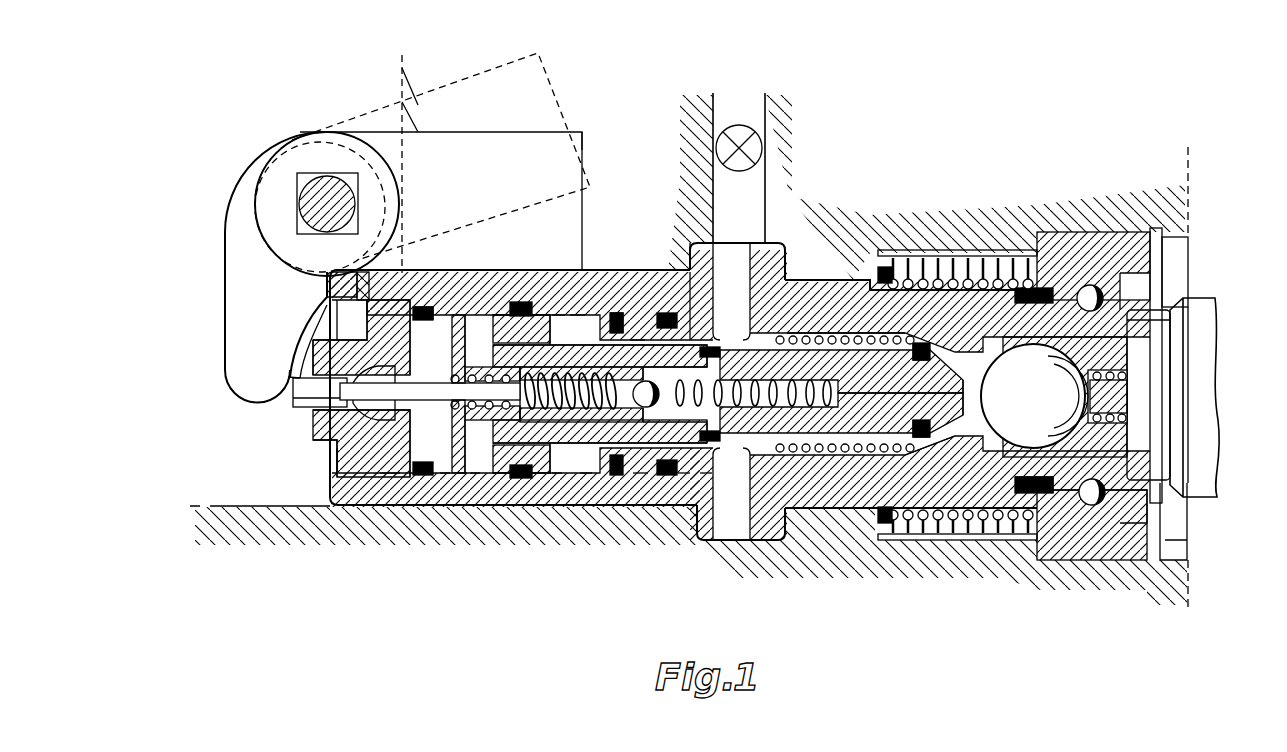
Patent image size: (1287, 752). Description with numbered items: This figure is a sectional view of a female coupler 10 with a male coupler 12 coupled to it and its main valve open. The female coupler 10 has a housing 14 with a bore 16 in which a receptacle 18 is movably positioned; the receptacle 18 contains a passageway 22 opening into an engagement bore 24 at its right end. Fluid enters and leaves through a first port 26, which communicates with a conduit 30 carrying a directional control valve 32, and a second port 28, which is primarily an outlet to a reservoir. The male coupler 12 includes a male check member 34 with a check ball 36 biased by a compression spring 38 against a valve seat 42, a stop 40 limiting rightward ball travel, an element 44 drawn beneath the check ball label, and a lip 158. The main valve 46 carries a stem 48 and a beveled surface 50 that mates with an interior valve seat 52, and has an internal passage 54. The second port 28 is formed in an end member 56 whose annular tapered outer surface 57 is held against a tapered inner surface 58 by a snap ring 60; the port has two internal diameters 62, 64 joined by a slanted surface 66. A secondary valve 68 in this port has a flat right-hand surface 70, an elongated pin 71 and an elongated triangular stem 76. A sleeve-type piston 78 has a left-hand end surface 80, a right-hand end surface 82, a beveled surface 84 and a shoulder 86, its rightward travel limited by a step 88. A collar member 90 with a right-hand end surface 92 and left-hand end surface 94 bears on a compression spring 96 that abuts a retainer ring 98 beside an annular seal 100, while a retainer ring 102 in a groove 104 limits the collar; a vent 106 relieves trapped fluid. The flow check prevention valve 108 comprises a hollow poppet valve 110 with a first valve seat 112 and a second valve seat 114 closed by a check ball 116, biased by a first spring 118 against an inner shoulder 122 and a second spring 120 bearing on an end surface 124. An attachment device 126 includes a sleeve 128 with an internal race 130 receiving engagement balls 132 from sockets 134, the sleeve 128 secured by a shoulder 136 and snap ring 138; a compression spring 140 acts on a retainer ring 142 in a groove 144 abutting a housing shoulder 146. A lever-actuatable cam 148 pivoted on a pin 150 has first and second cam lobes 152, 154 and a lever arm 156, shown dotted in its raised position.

The female coupler 10 is at (994, 141).
The male coupler 12 is at (1216, 298).
The housing 14 is at (1190, 172).
The bore 16 is at (948, 255).
The receptacle 18 is at (649, 300).
The passageway 22 is at (973, 500).
The engagement bore 24 is at (1016, 492).
The first port 26 is at (740, 300).
The second port 28 is at (311, 340).
The conduit 30 is at (766, 186).
The directional control valve 32 is at (752, 128).
The male check member 34 is at (1165, 497).
The check ball 36 is at (1013, 403).
The compression spring 38 is at (1110, 418).
The stop 40 is at (1110, 394).
The valve seat 42 is at (990, 372).
The seat 44 is at (993, 408).
The main valve 46 is at (836, 369).
The stem 48 is at (910, 376).
The beveled surface 50 is at (892, 426).
The interior valve seat 52 is at (907, 470).
The internal passage 54 is at (748, 410).
The end member 56 is at (373, 346).
The annular tapered outer surface 57 is at (382, 290).
The tapered inner surface 58 is at (420, 302).
The snap ring 60 is at (352, 268).
The internal diameter 62 is at (470, 305).
The internal diameter 64 is at (322, 345).
The slanted surface 66 is at (337, 447).
The secondary valve 68 is at (305, 404).
The flat right-hand surface 70 is at (368, 432).
The elongated pin 71 is at (390, 476).
The elongated triangular stem 76 is at (318, 394).
The piston 78 is at (531, 344).
The left-hand end surface 80 is at (502, 292).
The right-hand end surface 82 is at (714, 298).
The beveled surface 84 is at (498, 350).
The shoulder 86 is at (517, 476).
The step 88 is at (578, 305).
The collar member 90 is at (680, 300).
The right-hand end surface 92 is at (787, 330).
The left-hand end surface 94 is at (636, 300).
The compression spring 96 is at (812, 330).
The retainer ring 98 is at (912, 450).
The annular seal 100 is at (916, 364).
The retainer ring 102 is at (618, 308).
The groove 104 is at (640, 476).
The vent 106 is at (558, 287).
The flow check prevention valve 108 is at (445, 476).
The hollow poppet valve 110 is at (462, 476).
The first valve seat 112 is at (474, 476).
The second valve seat 114 is at (684, 476).
The check ball 116 is at (707, 476).
The first spring 118 is at (557, 476).
The second spring 120 is at (798, 406).
The inner shoulder 122 is at (585, 476).
The end surface 124 is at (826, 386).
The attachment device 126 is at (1101, 192).
The sleeve 128 is at (1117, 243).
The internal race 130 is at (1162, 268).
The engagement balls 132 is at (1150, 315).
The sockets 134 is at (1080, 285).
The shoulder 136 is at (1020, 265).
The snap ring 138 is at (1170, 236).
The compression spring 140 is at (945, 255).
The retainer ring 142 is at (912, 270).
The groove 144 is at (880, 278).
The shoulder 146 is at (888, 290).
The lever-actuatable cam 148 is at (237, 271).
The pin 150 is at (324, 184).
The first cam lobe 152 is at (326, 300).
The second cam lobe 154 is at (292, 378).
The lever arm 156 is at (471, 153).
The lip 158 is at (1081, 505).